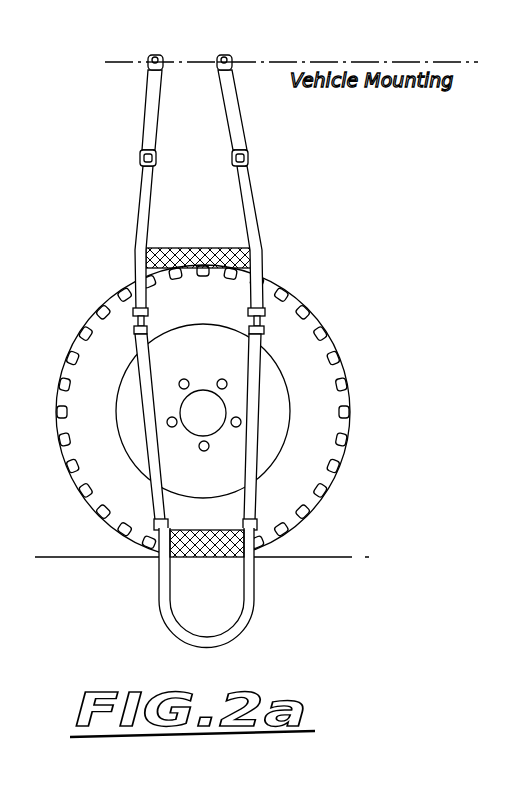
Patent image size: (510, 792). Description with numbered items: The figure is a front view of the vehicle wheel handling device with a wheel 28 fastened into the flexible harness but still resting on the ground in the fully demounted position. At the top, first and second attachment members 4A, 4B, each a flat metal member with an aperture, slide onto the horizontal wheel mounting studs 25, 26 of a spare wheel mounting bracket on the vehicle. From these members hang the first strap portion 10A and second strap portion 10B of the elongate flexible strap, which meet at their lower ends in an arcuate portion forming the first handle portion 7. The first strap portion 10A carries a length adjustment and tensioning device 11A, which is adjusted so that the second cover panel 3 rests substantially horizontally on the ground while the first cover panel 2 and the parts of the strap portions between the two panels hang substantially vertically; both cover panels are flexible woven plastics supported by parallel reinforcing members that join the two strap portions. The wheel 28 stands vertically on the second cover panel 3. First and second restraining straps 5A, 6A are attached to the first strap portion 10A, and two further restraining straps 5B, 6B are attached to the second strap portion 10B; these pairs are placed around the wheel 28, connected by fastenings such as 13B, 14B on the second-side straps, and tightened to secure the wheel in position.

The first cover panel 2 is at (196, 249).
The second cover panel 3 is at (212, 559).
The first attachment member 4A is at (149, 62).
The second attachment member 4B is at (232, 63).
The first restraining strap 5A is at (141, 264).
The further restraining strap 5B is at (262, 266).
The second restraining strap 6A is at (160, 526).
The further restraining strap 6B is at (257, 525).
The first handle portion 7 is at (200, 643).
The first strap portion 10A is at (140, 203).
The second strap portion 10B is at (257, 205).
The length adjustment and tensioning device 11A is at (140, 155).
The fastening 13B is at (266, 321).
The fastening 14B is at (264, 333).
The wheel mounting stud 25 is at (160, 55).
The wheel mounting stud 26 is at (224, 55).
The wheel 28 is at (308, 302).